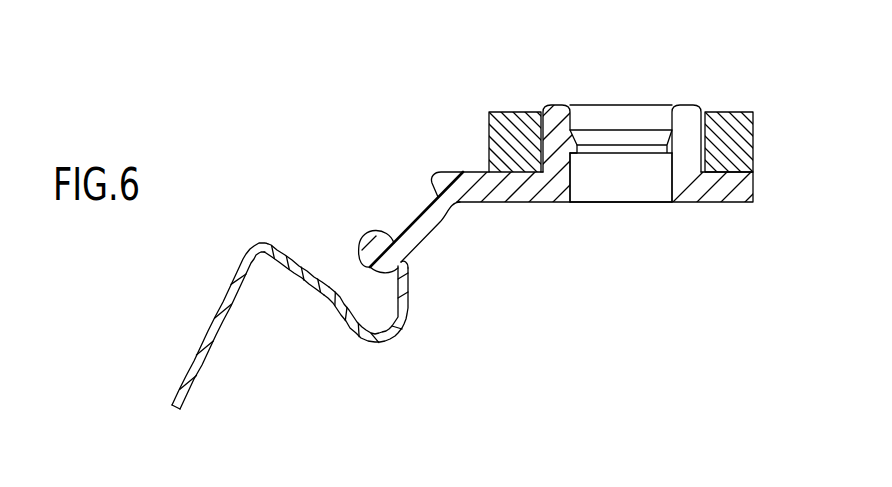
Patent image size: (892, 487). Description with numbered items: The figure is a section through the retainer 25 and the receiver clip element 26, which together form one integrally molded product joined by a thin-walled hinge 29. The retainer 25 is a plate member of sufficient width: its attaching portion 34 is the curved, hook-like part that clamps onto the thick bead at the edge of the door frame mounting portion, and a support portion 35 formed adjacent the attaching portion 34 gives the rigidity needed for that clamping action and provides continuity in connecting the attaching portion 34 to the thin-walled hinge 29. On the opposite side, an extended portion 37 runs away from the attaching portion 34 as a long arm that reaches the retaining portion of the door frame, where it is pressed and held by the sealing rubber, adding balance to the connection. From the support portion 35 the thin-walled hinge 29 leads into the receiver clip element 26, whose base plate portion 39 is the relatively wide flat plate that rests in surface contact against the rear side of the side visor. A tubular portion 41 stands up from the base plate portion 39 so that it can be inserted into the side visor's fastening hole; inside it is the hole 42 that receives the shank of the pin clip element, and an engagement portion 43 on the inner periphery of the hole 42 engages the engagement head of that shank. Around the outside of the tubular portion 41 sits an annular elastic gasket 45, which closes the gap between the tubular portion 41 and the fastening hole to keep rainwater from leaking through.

The retainer 25 is at (318, 158).
The receiver clip element 26 is at (716, 87).
The thin-walled hinge 29 is at (433, 222).
The attaching portion 34 is at (378, 343).
The support portion 35 is at (360, 238).
The extended portion 37 is at (210, 317).
The base plate portion 39 is at (520, 202).
The tubular portion 41 is at (560, 105).
The hole 42 is at (613, 183).
The engagement portion 43 is at (628, 147).
The annular elastic gasket 45 is at (753, 133).